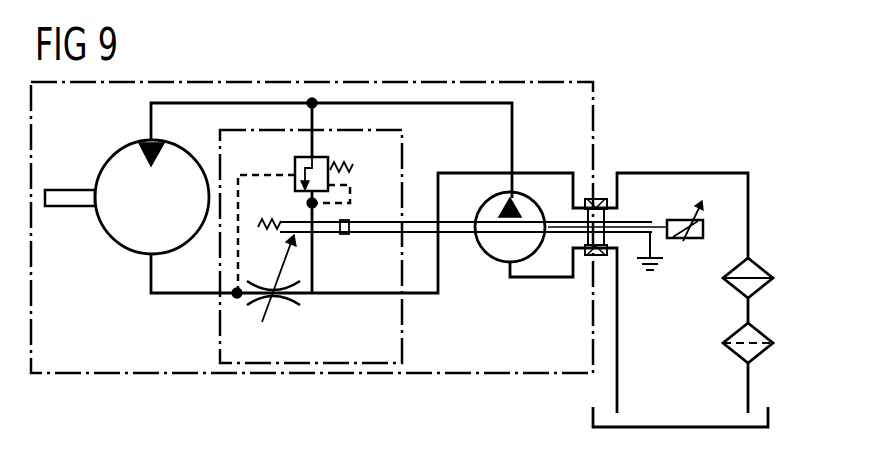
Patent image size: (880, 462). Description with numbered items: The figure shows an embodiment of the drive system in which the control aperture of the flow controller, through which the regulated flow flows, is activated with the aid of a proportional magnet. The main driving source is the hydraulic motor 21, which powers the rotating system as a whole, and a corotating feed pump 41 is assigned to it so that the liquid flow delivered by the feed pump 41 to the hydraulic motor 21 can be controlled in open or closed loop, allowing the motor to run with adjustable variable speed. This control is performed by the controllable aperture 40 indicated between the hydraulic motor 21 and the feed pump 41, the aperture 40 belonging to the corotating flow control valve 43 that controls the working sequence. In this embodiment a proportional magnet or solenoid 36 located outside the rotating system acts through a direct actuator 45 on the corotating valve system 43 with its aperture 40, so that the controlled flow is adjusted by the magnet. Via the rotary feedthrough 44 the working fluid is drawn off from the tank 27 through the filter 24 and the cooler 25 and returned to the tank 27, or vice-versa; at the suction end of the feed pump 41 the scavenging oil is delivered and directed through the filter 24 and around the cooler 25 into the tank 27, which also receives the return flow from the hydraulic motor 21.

The hydraulic motor 21 is at (122, 150).
The flow control valve 43 is at (294, 167).
The controllable aperture 40 is at (276, 300).
The direct actuator 45 is at (368, 232).
The feed pump 41 is at (484, 253).
The rotary feedthrough 44 is at (600, 200).
The proportional magnet or solenoid 36 is at (697, 242).
The cooler 25 is at (737, 297).
The filter 24 is at (737, 360).
The tank 27 is at (592, 417).